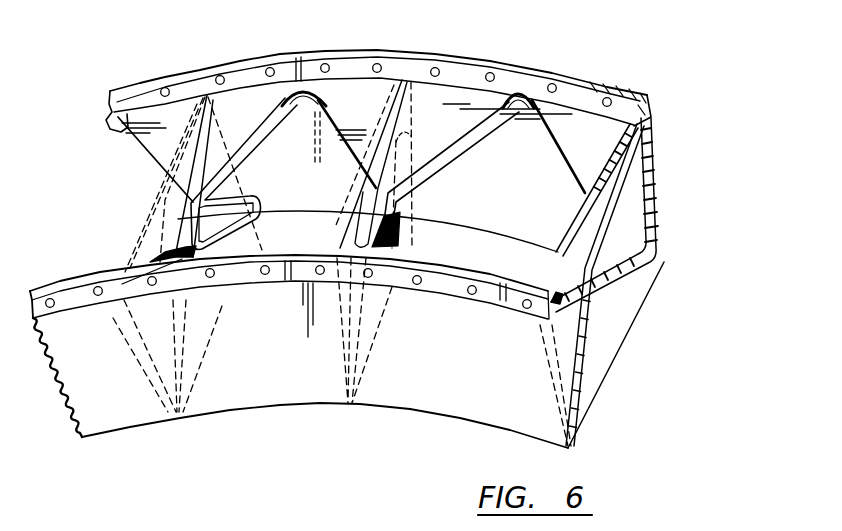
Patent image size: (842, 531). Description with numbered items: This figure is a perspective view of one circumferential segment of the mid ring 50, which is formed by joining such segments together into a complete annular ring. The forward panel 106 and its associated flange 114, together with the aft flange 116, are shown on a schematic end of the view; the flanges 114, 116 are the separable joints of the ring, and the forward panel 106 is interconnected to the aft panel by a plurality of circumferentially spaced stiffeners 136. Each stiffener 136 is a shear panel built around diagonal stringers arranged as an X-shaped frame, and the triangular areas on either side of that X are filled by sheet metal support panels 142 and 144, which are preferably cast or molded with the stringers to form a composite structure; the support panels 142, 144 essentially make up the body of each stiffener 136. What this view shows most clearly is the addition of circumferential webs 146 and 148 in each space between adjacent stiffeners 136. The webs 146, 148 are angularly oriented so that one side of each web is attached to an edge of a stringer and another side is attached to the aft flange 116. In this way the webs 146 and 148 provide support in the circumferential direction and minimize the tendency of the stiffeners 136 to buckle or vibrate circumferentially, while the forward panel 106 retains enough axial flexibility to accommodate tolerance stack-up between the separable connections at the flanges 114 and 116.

The mid ring 50 is at (85, 215).
The forward panel 106 is at (264, 378).
The flange 114 is at (437, 284).
The aft flange 116 is at (506, 62).
The stiffener 136 is at (172, 252).
The support panel 142 is at (568, 335).
The support panel 144 is at (613, 228).
The circumferential web 146 is at (353, 145).
The circumferential web 148 is at (243, 117).